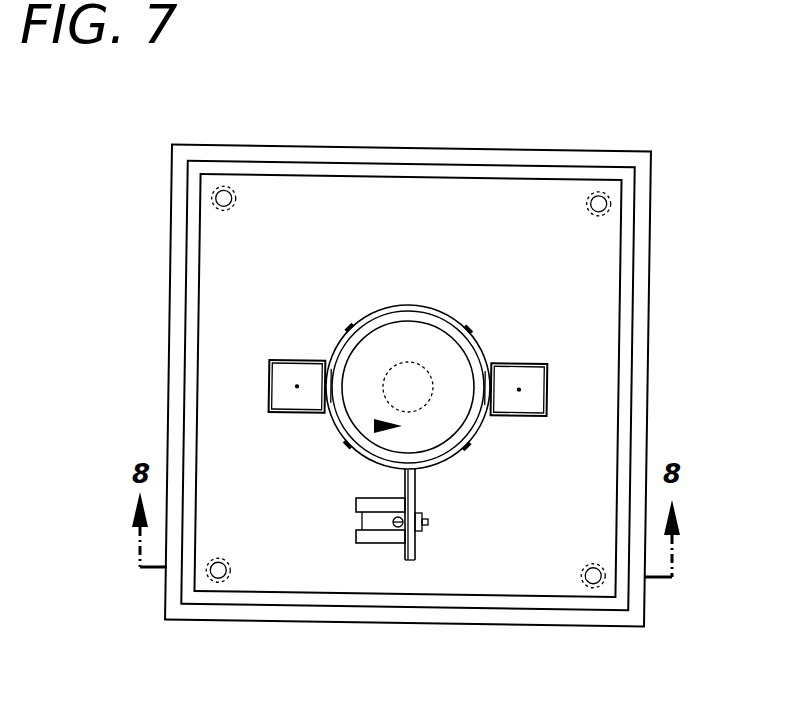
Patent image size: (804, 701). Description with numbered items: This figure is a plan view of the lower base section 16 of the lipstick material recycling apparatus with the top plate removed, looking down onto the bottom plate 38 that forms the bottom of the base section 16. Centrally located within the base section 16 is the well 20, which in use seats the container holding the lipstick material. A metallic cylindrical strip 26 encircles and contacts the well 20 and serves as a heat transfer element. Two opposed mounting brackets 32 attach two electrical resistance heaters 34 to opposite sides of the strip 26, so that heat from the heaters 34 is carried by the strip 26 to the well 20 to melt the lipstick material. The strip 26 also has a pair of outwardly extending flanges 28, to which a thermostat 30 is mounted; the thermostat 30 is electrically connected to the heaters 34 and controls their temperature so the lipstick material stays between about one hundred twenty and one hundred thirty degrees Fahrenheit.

The lower base section 16 is at (650, 353).
The bottom plate 38 is at (512, 203).
The cylindrical strip 26 is at (424, 308).
The electrical resistance heaters 34 is at (288, 370).
The mounting brackets 32 is at (269, 387).
The well 20 is at (376, 427).
The outwardly extending flanges 28 is at (405, 485).
The thermostat 30 is at (377, 520).